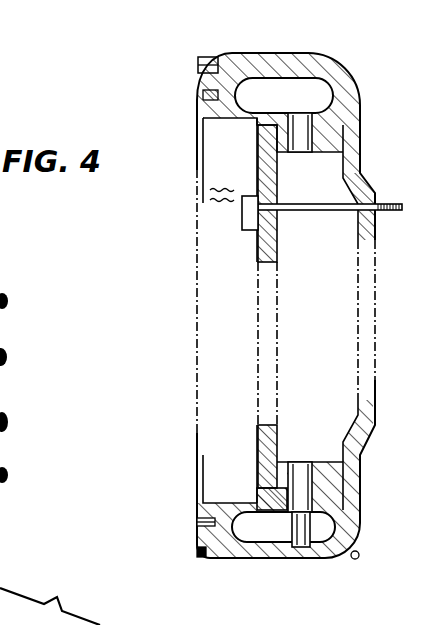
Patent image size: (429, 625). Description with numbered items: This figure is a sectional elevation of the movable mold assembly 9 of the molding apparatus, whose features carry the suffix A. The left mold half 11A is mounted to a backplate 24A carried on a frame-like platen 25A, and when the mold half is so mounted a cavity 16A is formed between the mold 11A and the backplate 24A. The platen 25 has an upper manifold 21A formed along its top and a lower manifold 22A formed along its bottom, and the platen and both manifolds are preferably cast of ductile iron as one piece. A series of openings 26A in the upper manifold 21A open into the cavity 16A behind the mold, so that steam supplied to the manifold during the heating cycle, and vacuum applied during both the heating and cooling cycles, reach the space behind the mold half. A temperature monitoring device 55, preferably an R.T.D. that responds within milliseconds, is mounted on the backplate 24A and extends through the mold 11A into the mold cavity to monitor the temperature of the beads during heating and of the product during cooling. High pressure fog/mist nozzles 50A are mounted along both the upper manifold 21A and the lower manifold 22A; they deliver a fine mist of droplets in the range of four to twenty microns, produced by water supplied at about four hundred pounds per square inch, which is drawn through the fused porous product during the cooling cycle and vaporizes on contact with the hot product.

The upper manifold 21A is at (268, 57).
The platen 25 is at (357, 93).
The openings 26A is at (314, 114).
The platen 25A is at (223, 122).
The backplate 24A is at (258, 180).
The left mold half 11A is at (345, 169).
The temperature monitoring device 55 is at (246, 231).
The cavity 16A is at (330, 253).
The movable mold assembly 9 is at (362, 491).
The lower manifold 22A is at (257, 558).
The high pressure fog/mist nozzle 50A is at (316, 548).